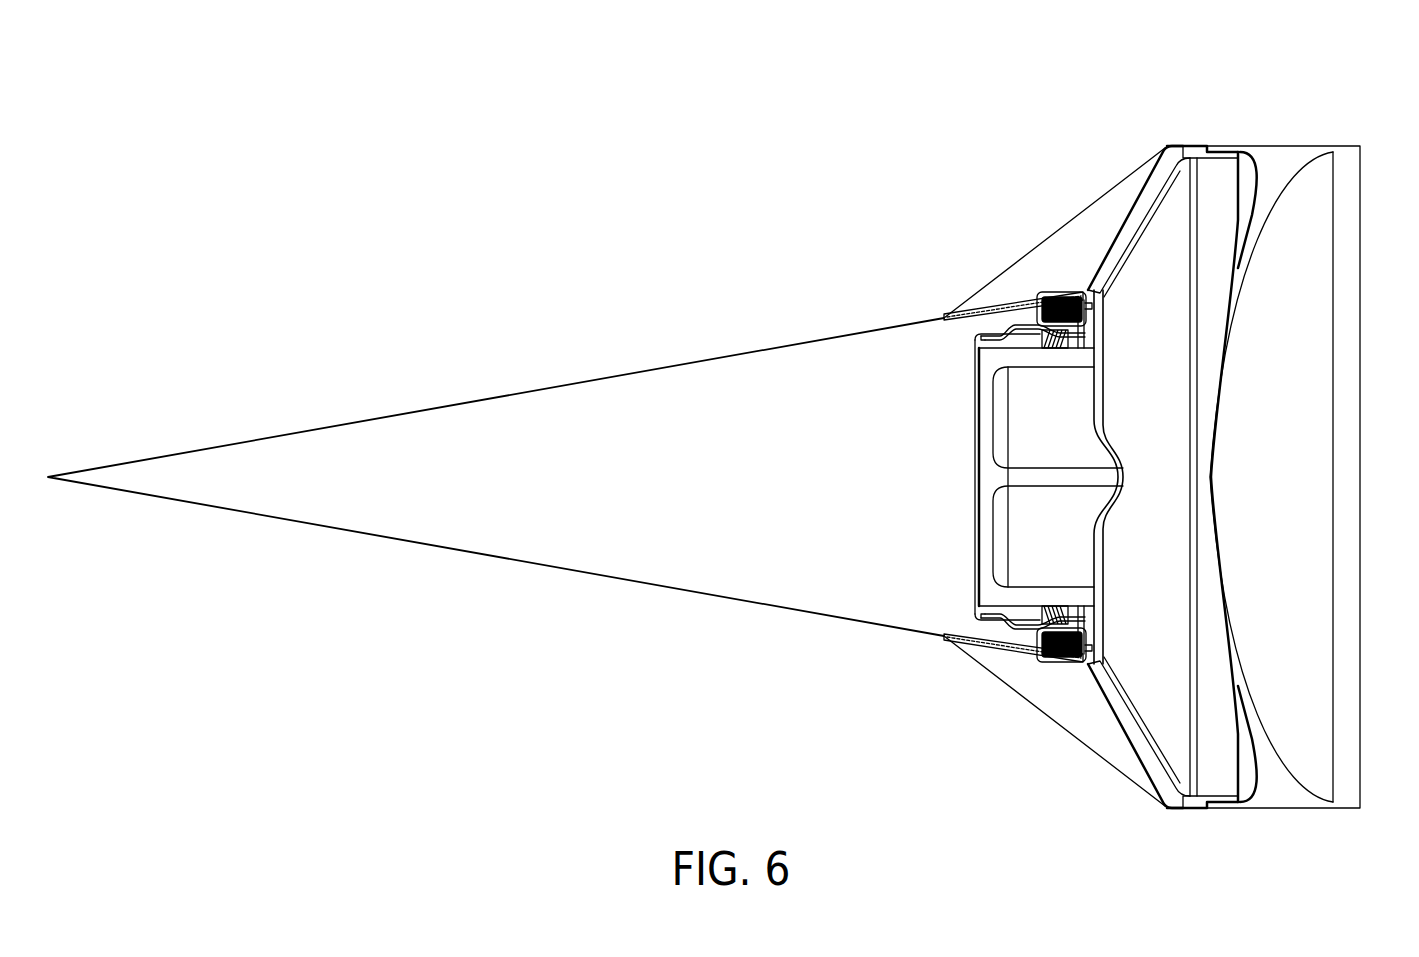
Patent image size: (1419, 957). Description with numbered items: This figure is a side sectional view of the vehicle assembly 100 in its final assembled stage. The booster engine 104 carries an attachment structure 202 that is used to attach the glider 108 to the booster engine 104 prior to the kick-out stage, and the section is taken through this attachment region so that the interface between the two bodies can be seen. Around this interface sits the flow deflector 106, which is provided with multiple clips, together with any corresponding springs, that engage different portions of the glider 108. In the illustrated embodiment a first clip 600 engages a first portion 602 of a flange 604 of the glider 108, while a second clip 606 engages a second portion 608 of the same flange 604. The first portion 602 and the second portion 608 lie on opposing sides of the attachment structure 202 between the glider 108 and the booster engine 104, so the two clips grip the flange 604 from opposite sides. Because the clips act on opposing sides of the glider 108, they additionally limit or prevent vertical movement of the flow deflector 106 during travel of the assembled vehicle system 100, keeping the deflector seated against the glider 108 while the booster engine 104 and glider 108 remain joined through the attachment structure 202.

The vehicle assembly 100 is at (1268, 118).
The booster engine 104 is at (1369, 248).
The flow deflector 106 is at (1084, 193).
The glider 108 is at (276, 532).
The attachment structure 202 is at (963, 470).
The first clip 600 is at (1073, 280).
The first portion 602 is at (1026, 309).
The flange 604 is at (964, 327).
The second clip 606 is at (1051, 666).
The second portion 608 is at (1007, 644).